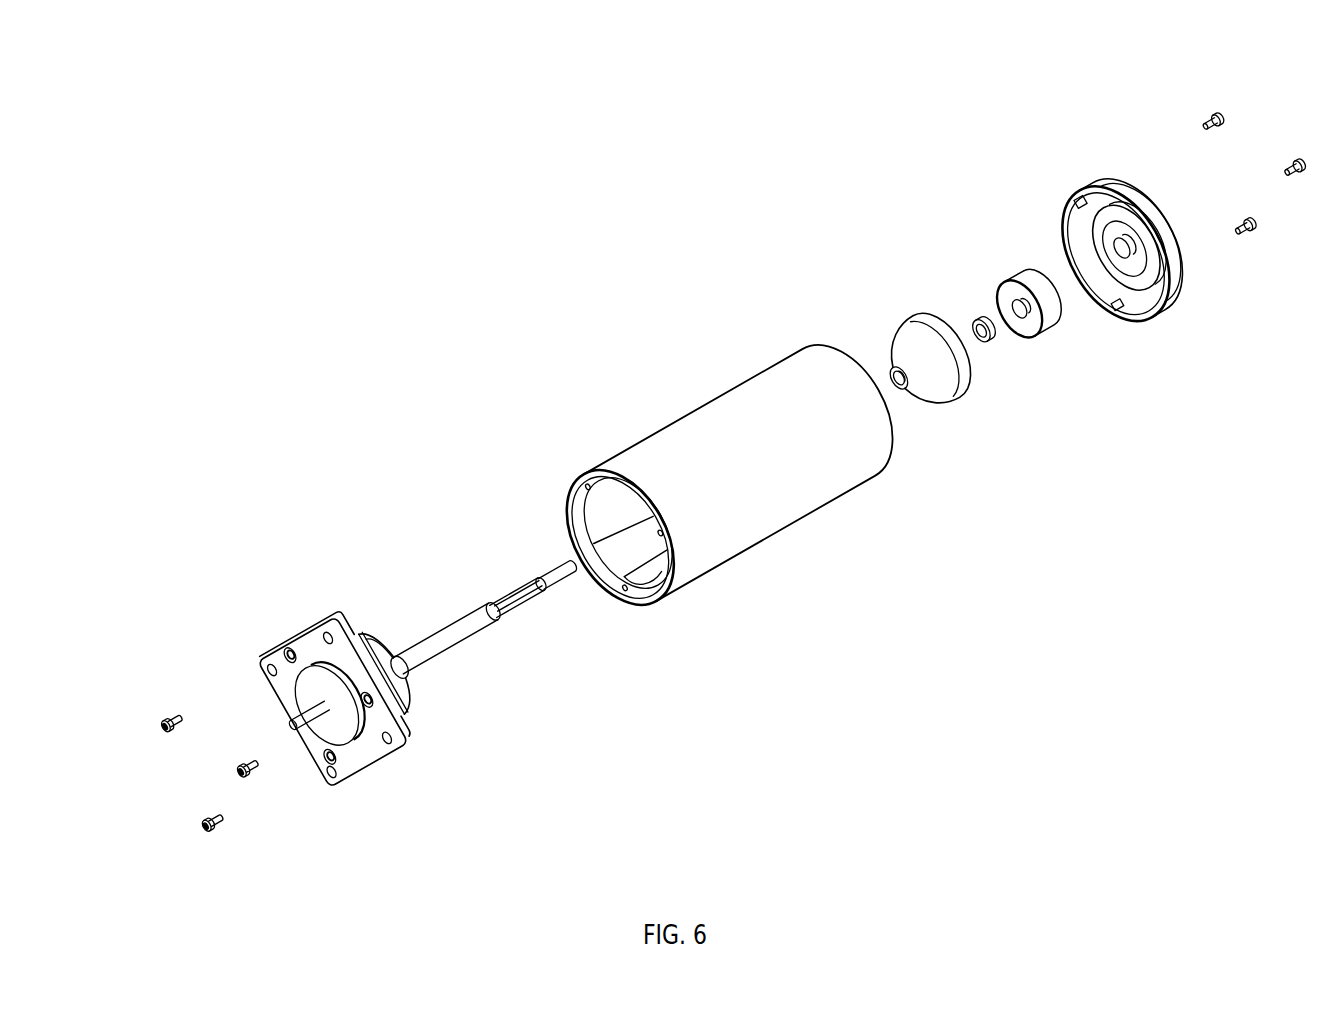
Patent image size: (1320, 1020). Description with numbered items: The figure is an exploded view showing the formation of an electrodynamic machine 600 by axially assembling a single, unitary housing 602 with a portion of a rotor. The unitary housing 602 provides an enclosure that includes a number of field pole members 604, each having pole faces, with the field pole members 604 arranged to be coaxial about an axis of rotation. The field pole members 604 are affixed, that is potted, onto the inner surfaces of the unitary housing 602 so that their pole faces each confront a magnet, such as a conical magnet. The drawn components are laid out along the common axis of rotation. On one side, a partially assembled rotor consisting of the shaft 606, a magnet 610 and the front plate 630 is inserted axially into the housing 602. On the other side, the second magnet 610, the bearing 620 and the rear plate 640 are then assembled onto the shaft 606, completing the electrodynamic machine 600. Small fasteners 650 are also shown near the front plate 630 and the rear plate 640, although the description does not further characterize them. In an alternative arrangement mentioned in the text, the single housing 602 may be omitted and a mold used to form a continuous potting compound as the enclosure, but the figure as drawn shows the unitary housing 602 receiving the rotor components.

The electrodynamic machine 600 is at (462, 280).
The unitary housing 602 is at (748, 378).
The field pole members 604 is at (645, 588).
The shaft 606 is at (437, 660).
The magnet 610 is at (391, 659).
The bearing 620 is at (1047, 320).
The front plate 630 is at (357, 773).
The rear plate 640 is at (1176, 303).
The screws 650 is at (1211, 114).